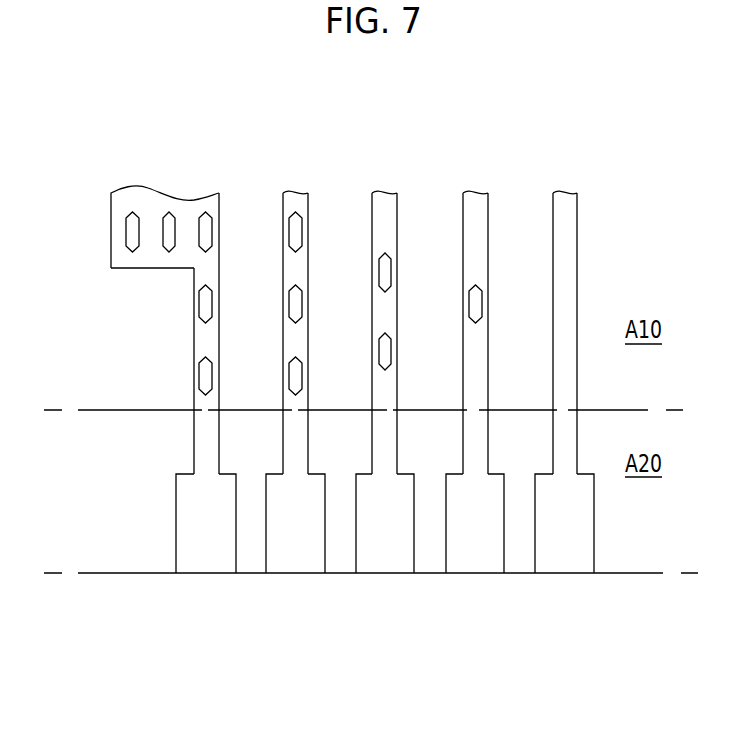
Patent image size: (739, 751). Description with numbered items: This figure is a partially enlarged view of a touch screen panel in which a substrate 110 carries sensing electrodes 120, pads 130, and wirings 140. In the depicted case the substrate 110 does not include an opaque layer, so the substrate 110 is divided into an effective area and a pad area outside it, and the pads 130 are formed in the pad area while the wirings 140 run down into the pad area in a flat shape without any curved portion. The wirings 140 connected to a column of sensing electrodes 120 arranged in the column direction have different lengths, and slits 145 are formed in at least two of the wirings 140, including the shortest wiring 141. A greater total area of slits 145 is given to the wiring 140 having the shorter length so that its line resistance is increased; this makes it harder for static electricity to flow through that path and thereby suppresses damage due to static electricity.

The substrate 110 is at (112, 580).
The sensing electrodes 120 is at (122, 208).
The pads 130 is at (211, 562).
The wirings 140 is at (563, 217).
The shortest wiring 141 is at (203, 340).
The slits 145 is at (289, 232).